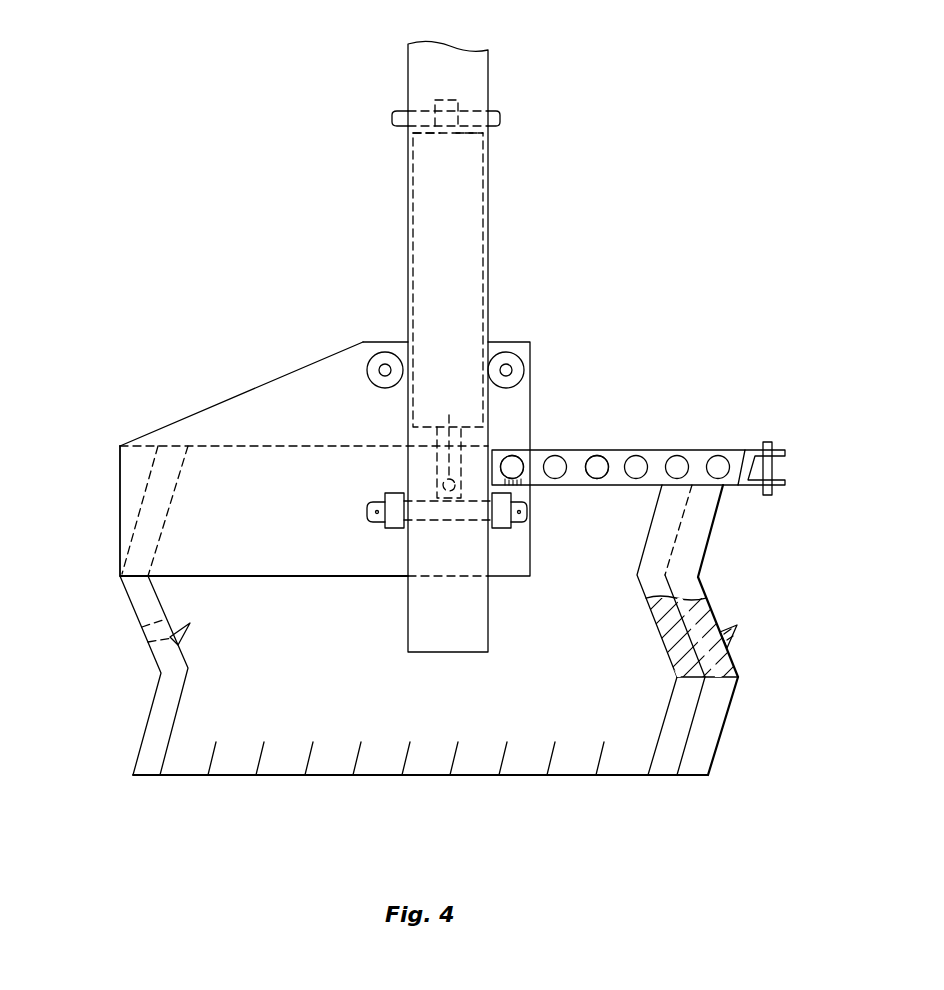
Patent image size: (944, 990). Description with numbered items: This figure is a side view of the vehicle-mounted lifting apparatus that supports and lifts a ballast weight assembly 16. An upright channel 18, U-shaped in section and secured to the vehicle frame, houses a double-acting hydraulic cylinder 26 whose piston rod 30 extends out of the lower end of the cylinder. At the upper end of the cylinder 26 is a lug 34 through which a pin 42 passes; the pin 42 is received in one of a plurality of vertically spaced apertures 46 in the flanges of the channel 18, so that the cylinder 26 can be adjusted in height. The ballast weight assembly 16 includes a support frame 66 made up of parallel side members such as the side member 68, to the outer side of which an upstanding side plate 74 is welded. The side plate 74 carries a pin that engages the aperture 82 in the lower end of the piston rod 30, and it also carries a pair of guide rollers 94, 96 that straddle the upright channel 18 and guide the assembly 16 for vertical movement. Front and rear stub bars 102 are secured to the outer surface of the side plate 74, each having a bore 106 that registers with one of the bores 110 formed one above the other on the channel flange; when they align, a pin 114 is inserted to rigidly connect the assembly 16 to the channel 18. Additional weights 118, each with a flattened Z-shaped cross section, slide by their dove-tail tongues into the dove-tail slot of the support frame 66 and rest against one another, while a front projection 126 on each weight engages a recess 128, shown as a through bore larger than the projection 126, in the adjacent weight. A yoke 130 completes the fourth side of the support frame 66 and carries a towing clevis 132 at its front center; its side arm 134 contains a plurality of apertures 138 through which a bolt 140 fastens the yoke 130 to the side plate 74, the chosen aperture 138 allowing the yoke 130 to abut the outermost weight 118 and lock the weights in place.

The ballast weight assembly 16 is at (736, 558).
The upright channel 18 is at (482, 78).
The hydraulic cylinder 26 is at (484, 247).
The piston rod 30 is at (436, 466).
The lug 34 is at (452, 100).
The pin 42 is at (502, 118).
The apertures 46 is at (411, 135).
The support frame 66 is at (116, 509).
The side member 68 is at (264, 448).
The side plate 74 is at (275, 402).
The aperture 82 is at (444, 441).
The guide roller 94 is at (380, 355).
The guide roller 96 is at (523, 367).
The stub bars 102 is at (394, 530).
The bore 106 is at (380, 520).
The bores 110 is at (407, 520).
The pin 114 is at (367, 509).
The additional weight 118 is at (712, 702).
The front projection 126 is at (740, 626).
The recess 128 is at (668, 632).
The yoke 130 is at (745, 447).
The towing clevis 132 is at (779, 470).
The side arm 134 is at (610, 453).
The apertures 138 is at (632, 463).
The bolt 140 is at (520, 461).